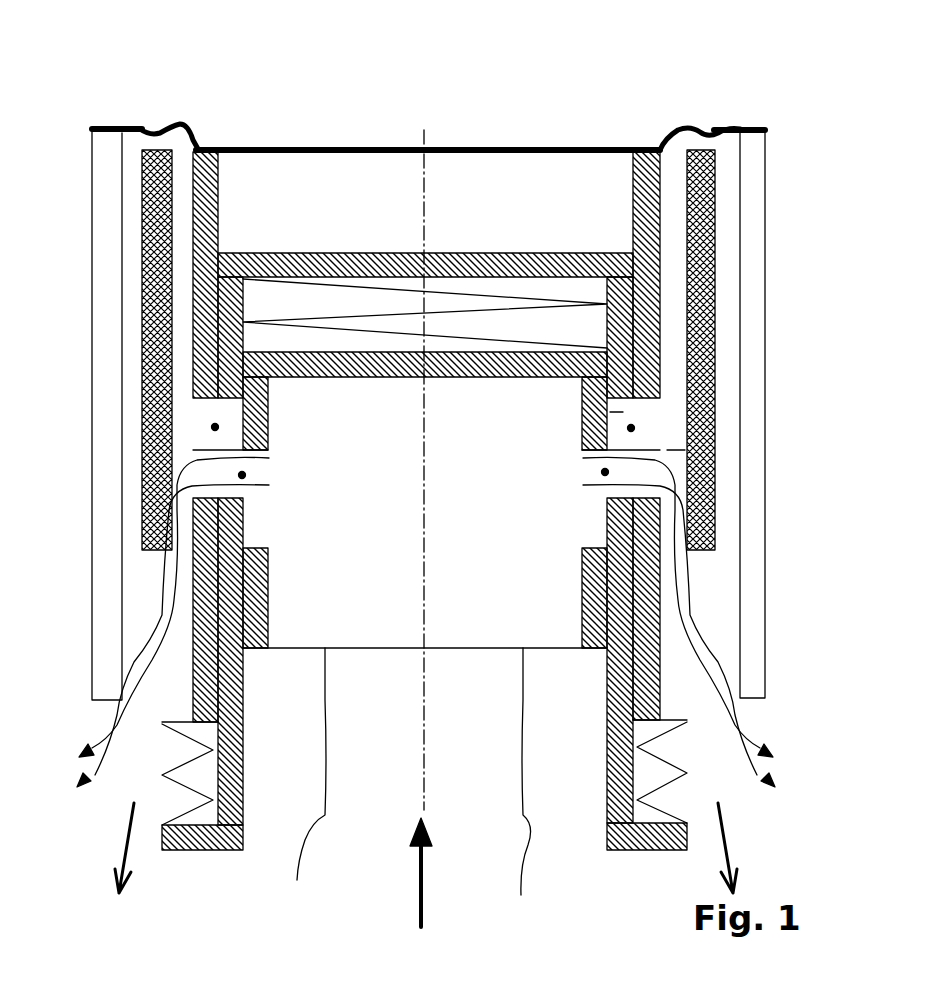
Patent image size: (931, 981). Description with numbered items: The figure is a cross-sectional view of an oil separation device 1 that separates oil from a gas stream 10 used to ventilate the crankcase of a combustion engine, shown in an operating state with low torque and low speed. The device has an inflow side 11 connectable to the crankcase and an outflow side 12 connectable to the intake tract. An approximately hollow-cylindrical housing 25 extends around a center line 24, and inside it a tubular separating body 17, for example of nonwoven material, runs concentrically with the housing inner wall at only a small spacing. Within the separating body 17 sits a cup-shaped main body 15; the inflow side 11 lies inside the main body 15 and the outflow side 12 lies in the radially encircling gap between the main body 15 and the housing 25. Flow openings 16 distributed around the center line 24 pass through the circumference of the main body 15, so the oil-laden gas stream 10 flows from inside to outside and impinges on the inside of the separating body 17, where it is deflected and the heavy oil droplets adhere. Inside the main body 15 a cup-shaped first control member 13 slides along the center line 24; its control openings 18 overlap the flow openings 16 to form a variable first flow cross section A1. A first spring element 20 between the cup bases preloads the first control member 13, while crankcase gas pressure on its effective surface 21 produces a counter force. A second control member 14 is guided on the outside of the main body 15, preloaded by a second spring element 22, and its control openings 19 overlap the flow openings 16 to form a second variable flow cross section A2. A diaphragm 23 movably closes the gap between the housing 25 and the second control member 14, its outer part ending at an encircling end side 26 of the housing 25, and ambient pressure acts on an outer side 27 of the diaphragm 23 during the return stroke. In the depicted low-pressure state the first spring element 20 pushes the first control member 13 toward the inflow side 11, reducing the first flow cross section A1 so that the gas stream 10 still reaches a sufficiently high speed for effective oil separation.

The oil separation device 1 is at (579, 92).
The gas stream 10 is at (413, 792).
The inflow side 11 is at (405, 918).
The outflow side 12 is at (778, 855).
The first control member 13 is at (270, 632).
The second control member 14 is at (632, 207).
The main body 15 is at (375, 262).
The flow openings 16 is at (232, 415).
The separating body 17 is at (710, 290).
The control openings 18 is at (257, 535).
The control openings 19 is at (198, 438).
The first spring element 20 is at (462, 297).
The effective surface 21 is at (372, 380).
The second spring element 22 is at (190, 852).
The diaphragm 23 is at (155, 130).
The center line 24 is at (425, 745).
The housing 25 is at (757, 195).
The encircling end side 26 is at (110, 118).
The outer side 27 is at (332, 140).
The first flow cross section A1 is at (242, 475).
The second flow cross section A2 is at (215, 427).